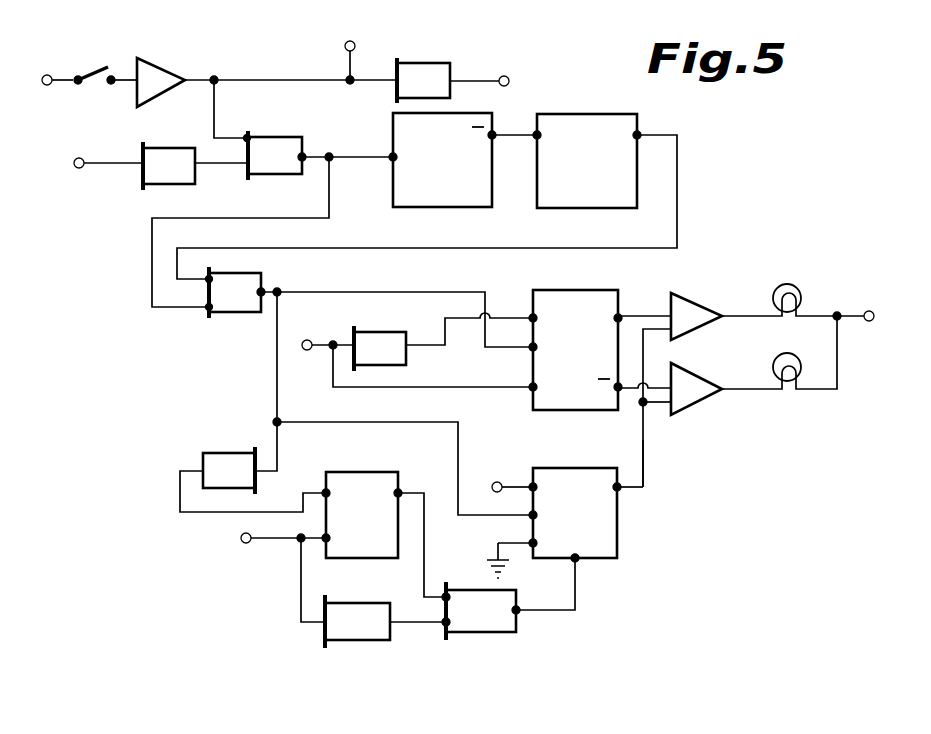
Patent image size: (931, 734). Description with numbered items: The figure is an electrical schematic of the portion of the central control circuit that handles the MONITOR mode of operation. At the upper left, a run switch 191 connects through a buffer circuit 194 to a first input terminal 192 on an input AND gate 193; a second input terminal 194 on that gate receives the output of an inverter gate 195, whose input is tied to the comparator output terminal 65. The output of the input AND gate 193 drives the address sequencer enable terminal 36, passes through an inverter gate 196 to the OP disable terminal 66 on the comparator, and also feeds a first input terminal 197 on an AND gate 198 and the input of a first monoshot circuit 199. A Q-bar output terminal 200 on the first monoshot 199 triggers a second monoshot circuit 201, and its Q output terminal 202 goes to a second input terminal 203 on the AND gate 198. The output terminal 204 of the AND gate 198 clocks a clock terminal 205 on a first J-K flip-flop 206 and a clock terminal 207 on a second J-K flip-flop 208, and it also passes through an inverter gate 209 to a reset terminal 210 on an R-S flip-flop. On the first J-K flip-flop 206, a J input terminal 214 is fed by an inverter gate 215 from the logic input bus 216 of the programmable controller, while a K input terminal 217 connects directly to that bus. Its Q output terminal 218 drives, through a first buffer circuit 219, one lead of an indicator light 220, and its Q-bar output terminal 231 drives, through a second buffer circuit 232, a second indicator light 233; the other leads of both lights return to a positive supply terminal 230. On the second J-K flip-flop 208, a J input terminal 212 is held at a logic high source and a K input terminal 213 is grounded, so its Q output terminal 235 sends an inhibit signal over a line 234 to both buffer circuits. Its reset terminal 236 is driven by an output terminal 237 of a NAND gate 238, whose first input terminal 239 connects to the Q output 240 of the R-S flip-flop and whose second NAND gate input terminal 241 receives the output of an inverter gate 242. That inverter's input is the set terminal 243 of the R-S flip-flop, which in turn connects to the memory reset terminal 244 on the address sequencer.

The run switch 191 is at (92, 67).
The buffer circuit 194 is at (171, 70).
The address sequencer enable terminal 36 is at (355, 44).
The inverter gate 196 is at (436, 63).
The OP disable terminal 66 is at (508, 77).
The inverter gate 195 is at (192, 124).
The comparator output terminal 65 is at (78, 168).
The input AND gate 193 is at (284, 137).
The first input terminal 192 is at (245, 138).
The first monoshot circuit 199 is at (393, 195).
The Q-bar output terminal 200 is at (495, 133).
The second monoshot circuit 201 is at (598, 114).
The Q output terminal 202 is at (641, 133).
The AND gate 198 is at (240, 312).
The second input terminal 203 is at (209, 279).
The first input terminal 197 is at (205, 312).
The output terminal 204 is at (264, 290).
The logic input bus 216 is at (311, 340).
The inverter gate 215 is at (375, 332).
The first J-K flip-flop 206 is at (598, 364).
The J input terminal 214 is at (532, 315).
The clock terminal 205 is at (530, 349).
The K input terminal 217 is at (530, 389).
The Q output terminal 218 is at (621, 314).
The Q-bar output terminal 231 is at (620, 392).
The first buffer circuit 219 is at (692, 300).
The second buffer circuit 232 is at (700, 405).
The indicator light 220 is at (787, 284).
The second indicator light 233 is at (776, 358).
The positive supply terminal 230 is at (870, 311).
The inverter gate 209 is at (234, 453).
The reset terminal 210 is at (325, 490).
The Q output 240 is at (400, 490).
The set terminal 243 is at (324, 537).
The memory reset terminal 244 is at (249, 544).
The inverter gate 242 is at (375, 590).
The NAND gate 238 is at (490, 632).
The first input terminal 239 is at (446, 593).
The second NAND gate input terminal 241 is at (446, 627).
The output terminal 237 is at (518, 612).
The second J-K flip-flop 208 is at (598, 522).
The J input terminal 212 is at (531, 485).
The clock terminal 207 is at (531, 514).
The K input terminal 213 is at (531, 541).
The Q output terminal 235 is at (620, 490).
The line 234 is at (645, 455).
The reset terminal 236 is at (577, 561).